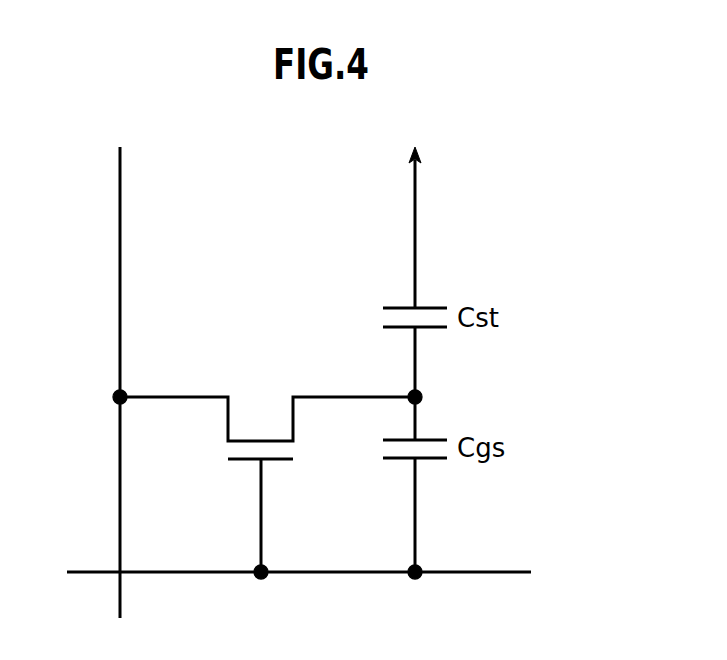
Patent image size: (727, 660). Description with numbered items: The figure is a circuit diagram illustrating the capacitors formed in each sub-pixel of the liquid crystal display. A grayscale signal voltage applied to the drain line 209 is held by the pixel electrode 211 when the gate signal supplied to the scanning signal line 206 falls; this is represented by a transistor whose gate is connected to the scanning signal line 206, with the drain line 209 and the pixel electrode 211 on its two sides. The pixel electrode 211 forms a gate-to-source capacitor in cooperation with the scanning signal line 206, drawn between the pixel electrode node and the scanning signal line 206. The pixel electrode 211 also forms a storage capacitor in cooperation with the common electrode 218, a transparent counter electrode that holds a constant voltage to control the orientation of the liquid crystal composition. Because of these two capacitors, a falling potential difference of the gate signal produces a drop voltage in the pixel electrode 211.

The drain line 209 is at (118, 264).
The common electrode 218 is at (417, 234).
The pixel electrode 211 is at (417, 371).
The scanning signal line 206 is at (490, 574).